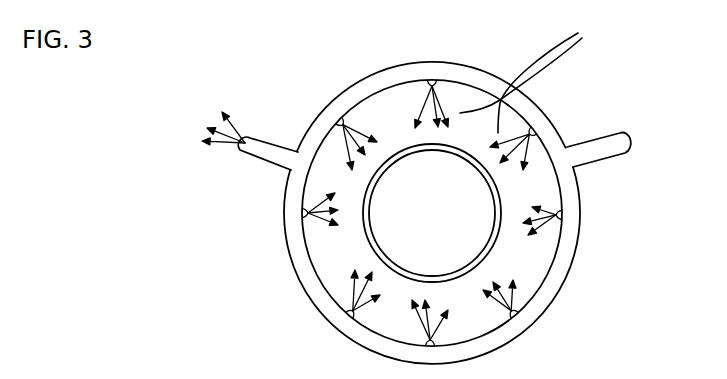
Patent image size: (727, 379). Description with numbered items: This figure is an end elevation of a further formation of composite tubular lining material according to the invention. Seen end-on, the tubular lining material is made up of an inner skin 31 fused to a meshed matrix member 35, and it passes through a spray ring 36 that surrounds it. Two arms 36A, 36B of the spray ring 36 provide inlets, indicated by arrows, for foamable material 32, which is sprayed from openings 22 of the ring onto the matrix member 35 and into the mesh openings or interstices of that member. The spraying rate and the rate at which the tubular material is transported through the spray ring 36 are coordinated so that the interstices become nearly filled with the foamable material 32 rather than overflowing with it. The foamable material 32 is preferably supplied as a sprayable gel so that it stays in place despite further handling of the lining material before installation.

The openings 22 is at (420, 342).
The inner skin 31 is at (408, 273).
The foamable material 32 is at (533, 75).
The meshed matrix member 35 is at (500, 245).
The spray ring 36 is at (532, 313).
The arm of the spray ring 36A is at (248, 140).
The arm of the spray ring 36B is at (603, 133).